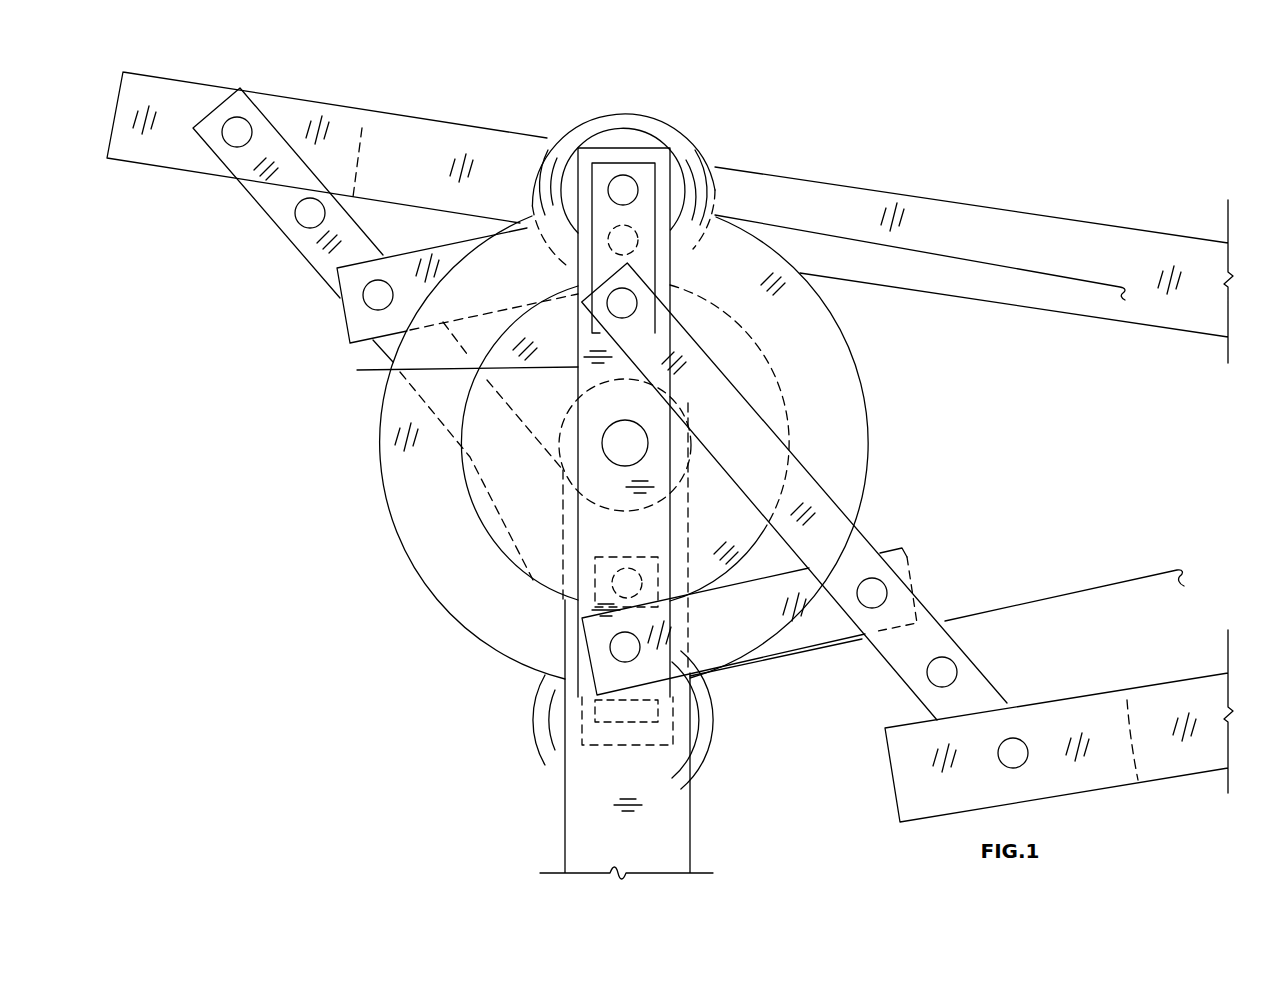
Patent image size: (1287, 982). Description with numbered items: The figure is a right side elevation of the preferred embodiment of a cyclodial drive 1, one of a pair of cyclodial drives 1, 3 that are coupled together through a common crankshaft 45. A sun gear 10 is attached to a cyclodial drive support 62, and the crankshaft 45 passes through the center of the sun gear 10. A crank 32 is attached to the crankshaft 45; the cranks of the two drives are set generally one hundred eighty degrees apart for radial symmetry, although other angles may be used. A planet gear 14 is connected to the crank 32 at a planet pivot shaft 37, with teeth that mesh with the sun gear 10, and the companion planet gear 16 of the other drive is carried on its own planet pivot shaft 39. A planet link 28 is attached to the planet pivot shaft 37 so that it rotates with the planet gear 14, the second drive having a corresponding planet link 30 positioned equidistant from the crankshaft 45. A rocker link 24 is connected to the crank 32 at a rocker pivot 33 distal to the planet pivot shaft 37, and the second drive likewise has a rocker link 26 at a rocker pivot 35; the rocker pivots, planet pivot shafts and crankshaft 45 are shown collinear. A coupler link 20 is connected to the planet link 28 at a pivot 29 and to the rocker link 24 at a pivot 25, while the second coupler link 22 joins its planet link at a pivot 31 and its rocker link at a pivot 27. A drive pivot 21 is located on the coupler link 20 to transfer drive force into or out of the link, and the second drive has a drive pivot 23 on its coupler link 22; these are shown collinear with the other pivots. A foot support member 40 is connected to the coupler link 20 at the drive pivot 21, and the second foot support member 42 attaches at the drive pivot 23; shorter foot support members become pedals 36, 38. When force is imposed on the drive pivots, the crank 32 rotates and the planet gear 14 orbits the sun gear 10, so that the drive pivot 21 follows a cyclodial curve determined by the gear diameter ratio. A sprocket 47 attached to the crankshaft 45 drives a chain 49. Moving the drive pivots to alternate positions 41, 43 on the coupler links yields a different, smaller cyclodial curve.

The cyclodial drive 1 is at (920, 382).
The cyclodial drive 3 is at (218, 267).
The sun gear 10 is at (773, 362).
The planet gear 14 is at (590, 98).
The planet gear 16 is at (538, 732).
The coupler link 20 is at (820, 478).
The drive pivot 21 is at (1007, 735).
The coupler link 22 is at (312, 265).
The drive pivot 23 is at (243, 118).
The rocker link 24 is at (850, 640).
The pivot 25 is at (883, 578).
The rocker link 26 is at (443, 243).
The pivot 27 is at (364, 300).
The planet link 28 is at (592, 167).
The pivot 29 is at (638, 302).
The planet link 30 is at (600, 712).
The pivot 31 is at (610, 592).
The crank 32 is at (450, 373).
The rocker pivot 33 is at (635, 656).
The rocker pivot 35 is at (630, 226).
The pedal 36 is at (1127, 700).
The planet pivot shaft 37 is at (612, 178).
The pedal 38 is at (362, 128).
The planet pivot shaft 39 is at (618, 708).
The foot support member 40 is at (1200, 677).
The alternate position 41 is at (957, 664).
The foot support member 42 is at (1012, 203).
The alternate position 43 is at (294, 211).
The crankshaft 45 is at (602, 446).
The sprocket 47 is at (413, 570).
The chain 49 is at (1057, 600).
The cyclodial drive support 62 is at (690, 815).